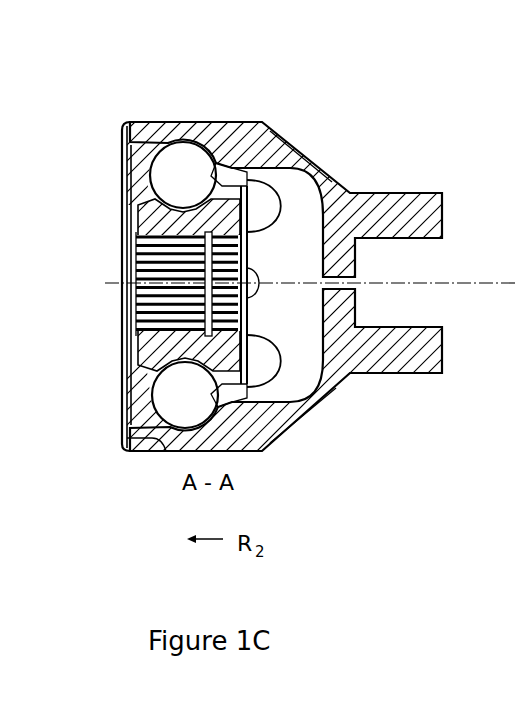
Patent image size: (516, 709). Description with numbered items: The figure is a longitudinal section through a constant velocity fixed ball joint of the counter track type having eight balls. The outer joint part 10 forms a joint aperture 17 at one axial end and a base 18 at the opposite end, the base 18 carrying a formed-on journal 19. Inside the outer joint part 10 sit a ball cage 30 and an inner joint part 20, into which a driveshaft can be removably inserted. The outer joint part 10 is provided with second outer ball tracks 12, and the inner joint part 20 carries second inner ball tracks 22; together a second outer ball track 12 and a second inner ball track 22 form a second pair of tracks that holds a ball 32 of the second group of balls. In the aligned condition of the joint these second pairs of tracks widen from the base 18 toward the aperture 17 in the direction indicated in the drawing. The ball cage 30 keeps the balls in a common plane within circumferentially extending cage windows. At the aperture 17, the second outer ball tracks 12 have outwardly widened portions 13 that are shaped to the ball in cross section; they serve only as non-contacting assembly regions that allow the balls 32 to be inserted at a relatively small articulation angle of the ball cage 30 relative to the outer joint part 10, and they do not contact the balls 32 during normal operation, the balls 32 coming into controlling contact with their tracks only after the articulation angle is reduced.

The outer joint part 10 is at (299, 106).
The second outer ball tracks 12 is at (224, 158).
The widened portions 13 is at (127, 435).
The joint aperture 17 is at (122, 170).
The base 18 is at (317, 172).
The journal 19 is at (412, 205).
The inner joint part 20 is at (128, 130).
The second inner ball tracks 22 is at (155, 140).
The ball cage 30 is at (263, 121).
The balls 32 is at (181, 165).